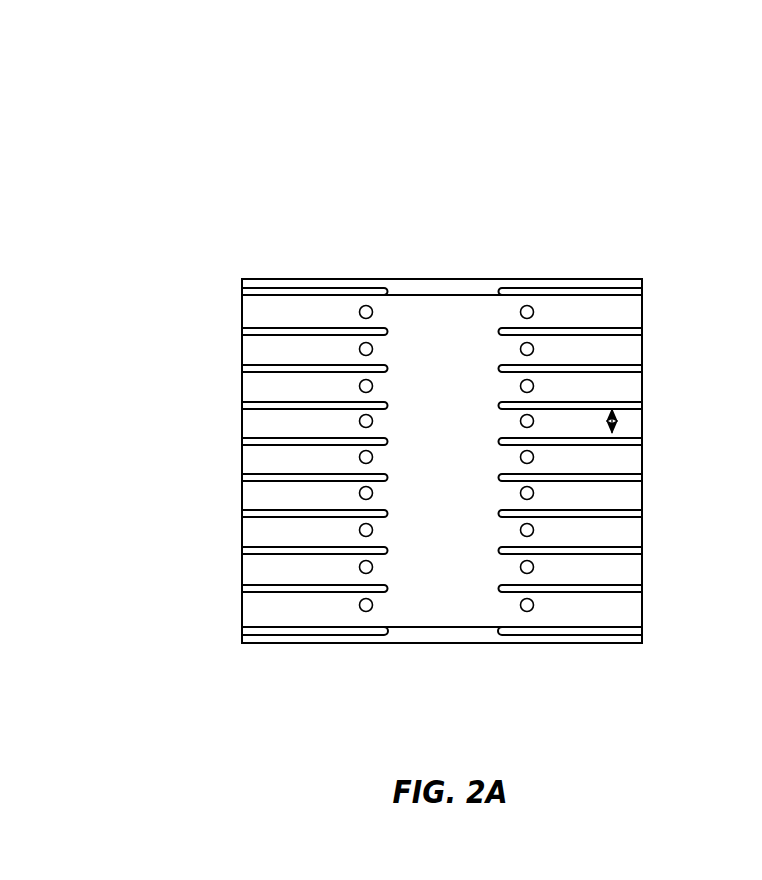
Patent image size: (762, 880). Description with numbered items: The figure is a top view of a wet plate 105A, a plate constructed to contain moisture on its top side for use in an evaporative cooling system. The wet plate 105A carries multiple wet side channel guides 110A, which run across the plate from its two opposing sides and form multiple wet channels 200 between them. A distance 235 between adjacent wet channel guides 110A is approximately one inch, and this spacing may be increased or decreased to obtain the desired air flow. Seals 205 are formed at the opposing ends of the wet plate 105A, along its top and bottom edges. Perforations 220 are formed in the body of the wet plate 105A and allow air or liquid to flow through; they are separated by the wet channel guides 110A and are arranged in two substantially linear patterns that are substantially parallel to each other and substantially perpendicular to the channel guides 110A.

The wet plate 105A is at (322, 144).
The wet side channel guide 110A is at (243, 474).
The wet channel 200 is at (258, 353).
The seal 205 is at (612, 279).
The perforation 220 is at (365, 613).
The distance between wet channel guides 235 is at (626, 420).